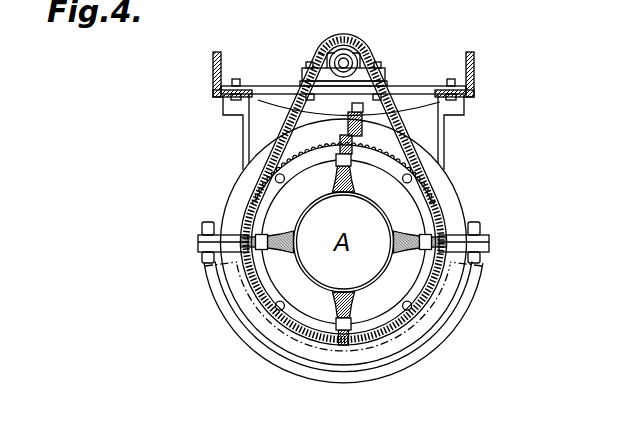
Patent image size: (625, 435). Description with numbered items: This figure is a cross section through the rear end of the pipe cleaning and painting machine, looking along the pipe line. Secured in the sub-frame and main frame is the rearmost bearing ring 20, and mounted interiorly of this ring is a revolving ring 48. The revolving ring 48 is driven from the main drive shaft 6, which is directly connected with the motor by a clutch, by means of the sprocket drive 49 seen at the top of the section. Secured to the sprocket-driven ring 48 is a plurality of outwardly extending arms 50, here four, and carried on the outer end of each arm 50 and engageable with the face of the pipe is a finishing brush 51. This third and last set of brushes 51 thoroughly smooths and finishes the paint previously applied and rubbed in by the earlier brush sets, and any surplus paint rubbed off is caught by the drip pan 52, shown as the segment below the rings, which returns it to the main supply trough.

The main drive shaft 6 is at (346, 60).
The bearing ring 20 is at (236, 204).
The revolving ring 48 is at (422, 202).
The sprocket drive 49 is at (358, 58).
The outwardly extending arms 50 is at (344, 346).
The finishing brush 51 is at (420, 236).
The drip pan 52 is at (417, 362).